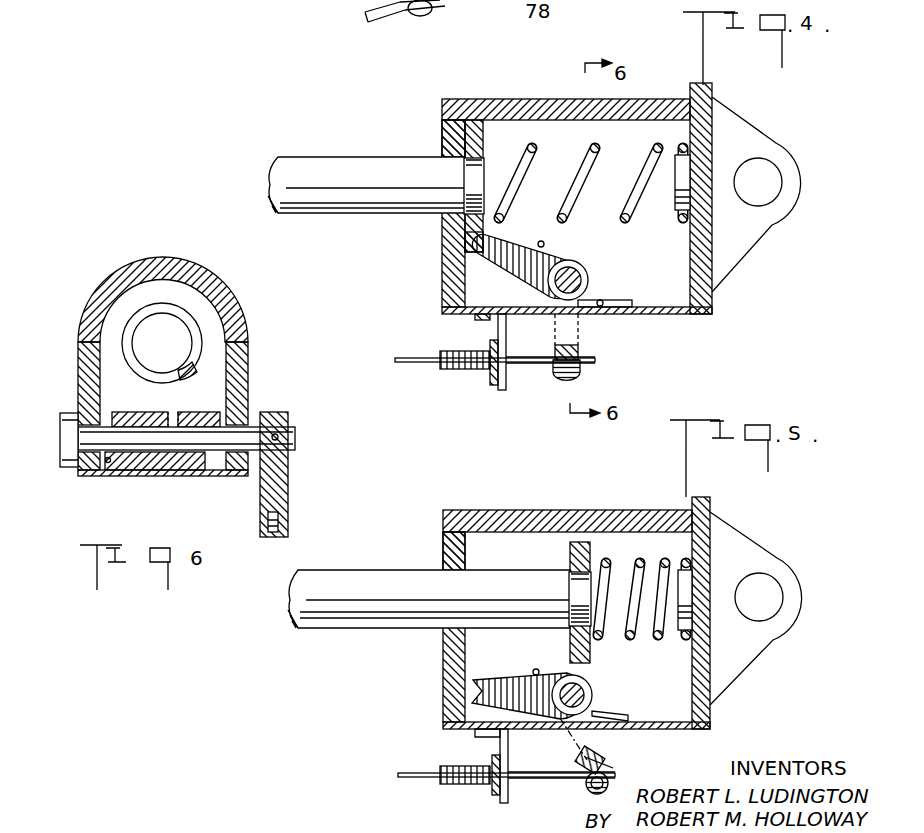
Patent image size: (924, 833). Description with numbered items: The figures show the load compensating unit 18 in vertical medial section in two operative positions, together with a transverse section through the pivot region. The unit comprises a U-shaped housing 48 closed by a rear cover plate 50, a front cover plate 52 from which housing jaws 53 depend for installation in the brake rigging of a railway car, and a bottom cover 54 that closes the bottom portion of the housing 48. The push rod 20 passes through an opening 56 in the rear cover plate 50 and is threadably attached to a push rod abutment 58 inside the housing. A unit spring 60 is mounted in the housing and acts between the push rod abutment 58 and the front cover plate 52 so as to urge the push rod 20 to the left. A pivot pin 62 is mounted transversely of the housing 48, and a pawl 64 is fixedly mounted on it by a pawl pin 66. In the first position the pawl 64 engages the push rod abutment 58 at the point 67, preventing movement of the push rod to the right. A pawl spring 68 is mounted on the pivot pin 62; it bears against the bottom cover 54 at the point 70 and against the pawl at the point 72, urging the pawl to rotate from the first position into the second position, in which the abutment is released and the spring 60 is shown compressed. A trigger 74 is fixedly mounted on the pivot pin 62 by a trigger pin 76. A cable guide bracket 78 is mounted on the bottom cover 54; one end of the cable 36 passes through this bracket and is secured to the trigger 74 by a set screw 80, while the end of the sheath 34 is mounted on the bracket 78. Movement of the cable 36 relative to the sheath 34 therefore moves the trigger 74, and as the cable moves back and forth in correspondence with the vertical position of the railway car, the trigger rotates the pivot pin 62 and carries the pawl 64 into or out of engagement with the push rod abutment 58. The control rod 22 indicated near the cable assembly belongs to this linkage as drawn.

In FIG. 4, the load compensating unit 18 is at (620, 197).
In FIG. 5, the load compensating unit 18 is at (620, 604).
In FIG. 6, the load compensating unit 18 is at (140, 374).
In FIG. 4, the push rod 20 is at (348, 157).
In FIG. 5, the push rod 20 is at (345, 628).
In FIG. 4, the control rod 22 is at (432, 370).
In FIG. 5, the control rod 22 is at (432, 780).
In FIG. 4, the sheath 34 is at (475, 368).
In FIG. 5, the sheath 34 is at (470, 785).
In FIG. 4, the cable 36 is at (530, 365).
In FIG. 5, the cable 36 is at (535, 785).
In FIG. 4, the housing 48 is at (656, 99).
In FIG. 5, the housing 48 is at (520, 510).
In FIG. 6, the housing 48 is at (136, 272).
In FIG. 4, the rear cover plate 50 is at (450, 270).
In FIG. 5, the rear cover plate 50 is at (450, 672).
In FIG. 4, the front cover plate 52 is at (712, 93).
In FIG. 5, the front cover plate 52 is at (712, 518).
In FIG. 4, the housing jaws 53 is at (784, 228).
In FIG. 5, the housing jaws 53 is at (760, 560).
In FIG. 4, the bottom cover 54 is at (685, 313).
In FIG. 5, the bottom cover 54 is at (460, 726).
In FIG. 6, the bottom cover 54 is at (175, 470).
In FIG. 4, the opening 56 is at (442, 137).
In FIG. 5, the opening 56 is at (443, 568).
In FIG. 4, the push rod abutment 58 is at (478, 121).
In FIG. 5, the push rod abutment 58 is at (585, 542).
In FIG. 4, the unit spring 60 is at (585, 170).
In FIG. 5, the unit spring 60 is at (652, 580).
In FIG. 6, the unit spring 60 is at (125, 330).
In FIG. 4, the pivot pin 62 is at (590, 284).
In FIG. 5, the pivot pin 62 is at (590, 694).
In FIG. 6, the pivot pin 62 is at (80, 455).
In FIG. 4, the pawl 64 is at (510, 262).
In FIG. 5, the pawl 64 is at (518, 700).
In FIG. 6, the pawl 64 is at (208, 465).
In FIG. 6, the pawl pin 66 is at (145, 470).
In FIG. 4, the pawl engagement point 67 is at (465, 240).
In FIG. 4, the pawl spring 68 is at (600, 307).
In FIG. 5, the pawl spring 68 is at (535, 672).
In FIG. 6, the pawl spring 68 is at (100, 465).
In FIG. 4, the pawl spring engagement with bottom cover 70 is at (625, 307).
In FIG. 5, the pawl spring engagement with bottom cover 70 is at (610, 716).
In FIG. 4, the pawl spring engagement with pawl 72 is at (545, 246).
In FIG. 4, the trigger 74 is at (555, 355).
In FIG. 5, the trigger 74 is at (602, 762).
In FIG. 6, the trigger 74 is at (280, 487).
In FIG. 6, the trigger pin 76 is at (283, 437).
In FIG. 4, the cable guide bracket 78 is at (498, 340).
In FIG. 5, the cable guide bracket 78 is at (500, 752).
In FIG. 5, the set screw 80 is at (597, 790).